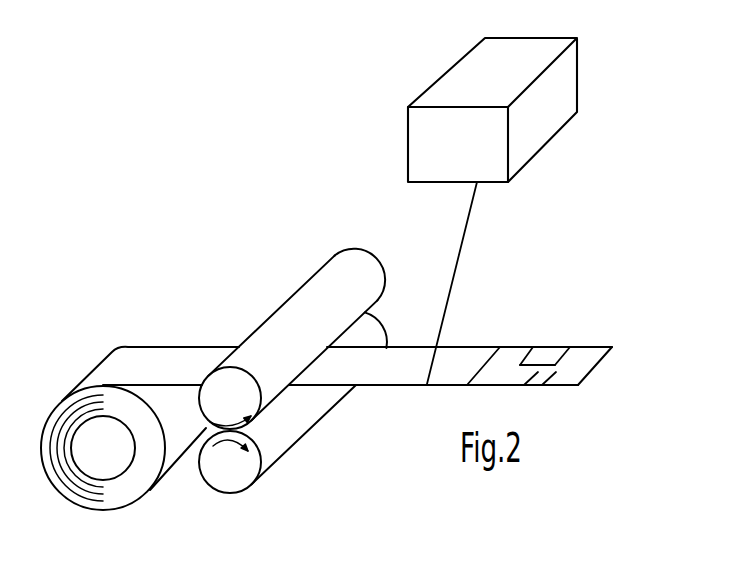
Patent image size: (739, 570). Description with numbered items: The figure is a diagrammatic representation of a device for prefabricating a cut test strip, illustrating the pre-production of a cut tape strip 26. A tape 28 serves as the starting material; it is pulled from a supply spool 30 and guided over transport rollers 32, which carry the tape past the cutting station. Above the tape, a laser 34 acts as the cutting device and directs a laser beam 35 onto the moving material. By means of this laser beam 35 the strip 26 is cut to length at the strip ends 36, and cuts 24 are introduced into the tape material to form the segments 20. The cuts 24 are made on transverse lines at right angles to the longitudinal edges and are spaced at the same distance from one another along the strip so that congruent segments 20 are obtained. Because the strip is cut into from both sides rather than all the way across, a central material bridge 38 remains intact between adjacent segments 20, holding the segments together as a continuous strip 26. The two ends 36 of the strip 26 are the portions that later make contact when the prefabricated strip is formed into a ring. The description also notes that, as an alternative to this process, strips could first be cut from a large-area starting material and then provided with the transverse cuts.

The segments 20 is at (522, 385).
The cuts 24 is at (470, 380).
The cut tape strip 26 is at (553, 347).
The tape 28 is at (197, 357).
The supply spool 30 is at (48, 424).
The transport rollers 32 is at (386, 330).
The laser 34 is at (543, 120).
The laser beam 35 is at (466, 238).
The ends of the strip 36 is at (555, 365).
The material bridge 38 is at (520, 367).